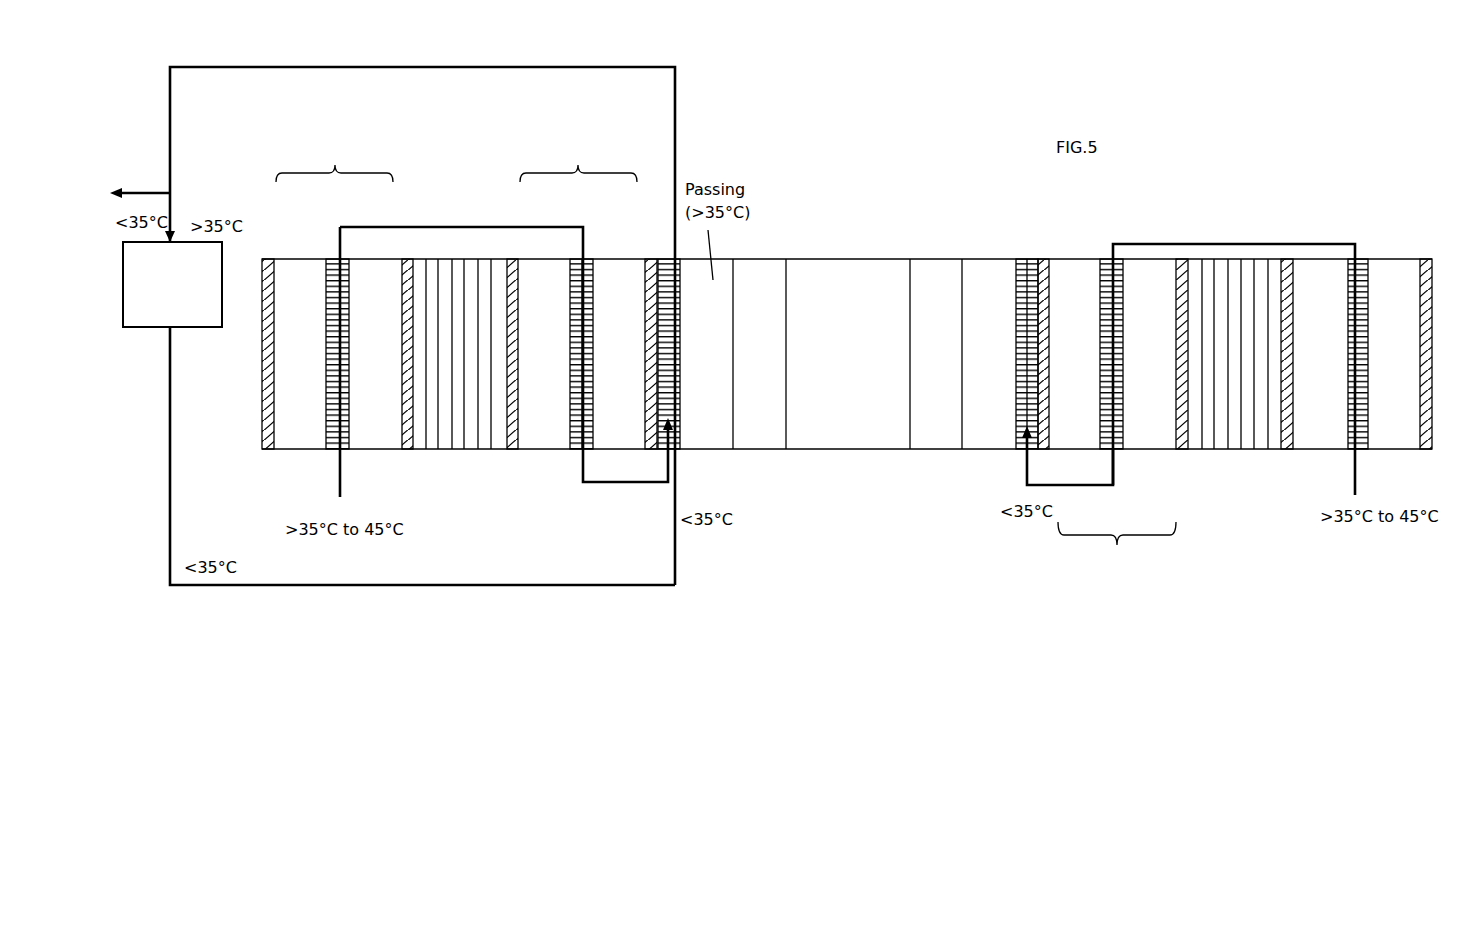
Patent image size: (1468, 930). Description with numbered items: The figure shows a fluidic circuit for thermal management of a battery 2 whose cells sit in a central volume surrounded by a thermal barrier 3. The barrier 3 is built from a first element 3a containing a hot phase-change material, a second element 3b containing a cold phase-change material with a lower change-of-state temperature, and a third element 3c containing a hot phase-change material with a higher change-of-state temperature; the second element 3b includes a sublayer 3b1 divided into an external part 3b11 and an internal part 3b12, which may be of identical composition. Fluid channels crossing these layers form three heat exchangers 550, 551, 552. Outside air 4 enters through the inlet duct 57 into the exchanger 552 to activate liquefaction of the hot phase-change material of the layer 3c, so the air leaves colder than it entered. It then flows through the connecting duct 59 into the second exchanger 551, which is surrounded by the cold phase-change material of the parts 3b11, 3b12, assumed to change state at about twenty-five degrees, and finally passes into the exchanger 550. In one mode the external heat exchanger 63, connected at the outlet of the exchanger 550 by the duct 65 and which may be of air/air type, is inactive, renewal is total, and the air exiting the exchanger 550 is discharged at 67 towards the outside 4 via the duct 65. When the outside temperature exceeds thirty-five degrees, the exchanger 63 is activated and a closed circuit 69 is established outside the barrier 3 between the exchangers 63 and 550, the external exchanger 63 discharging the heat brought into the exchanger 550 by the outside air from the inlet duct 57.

The battery 2 is at (842, 275).
The thermal barrier 3 is at (954, 517).
The first element 3a is at (768, 428).
The second element 3b is at (578, 157).
The sublayer 3b1 is at (1117, 547).
The external part 3b11 is at (1167, 435).
The internal part 3b12 is at (1075, 293).
The third element 3c is at (334, 157).
The outside air 4 is at (231, 367).
The inlet duct 57 is at (345, 481).
The connecting duct 59 is at (471, 223).
The external heat exchanger 63 is at (172, 279).
The duct 65 is at (507, 65).
The discharge 67 is at (139, 189).
The closed circuit 69 is at (502, 590).
The heat exchanger 550 is at (667, 270).
The second heat exchanger 551 is at (580, 437).
The heat exchanger 552 is at (322, 428).